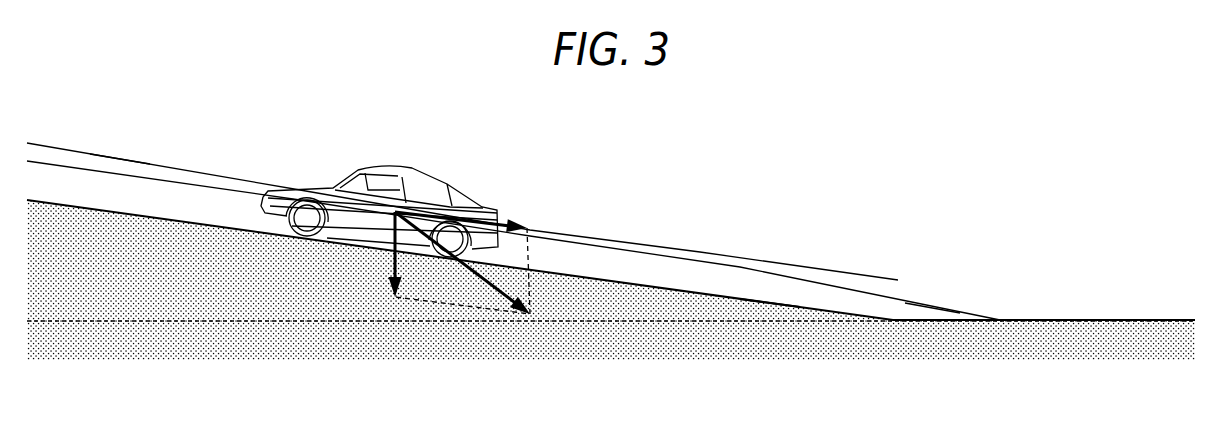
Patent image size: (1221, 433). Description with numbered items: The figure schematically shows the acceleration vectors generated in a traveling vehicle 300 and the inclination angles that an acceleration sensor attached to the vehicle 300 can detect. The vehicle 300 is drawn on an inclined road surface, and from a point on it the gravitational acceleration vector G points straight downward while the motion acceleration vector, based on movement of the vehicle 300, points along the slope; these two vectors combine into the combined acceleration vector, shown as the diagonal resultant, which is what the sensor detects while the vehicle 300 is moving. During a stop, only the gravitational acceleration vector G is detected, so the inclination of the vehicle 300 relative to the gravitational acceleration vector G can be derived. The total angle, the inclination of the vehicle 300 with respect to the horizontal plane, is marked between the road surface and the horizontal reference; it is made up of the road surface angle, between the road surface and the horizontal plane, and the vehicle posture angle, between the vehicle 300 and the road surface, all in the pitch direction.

The vehicle 300 is at (462, 185).
The gravitational acceleration vector G is at (368, 257).